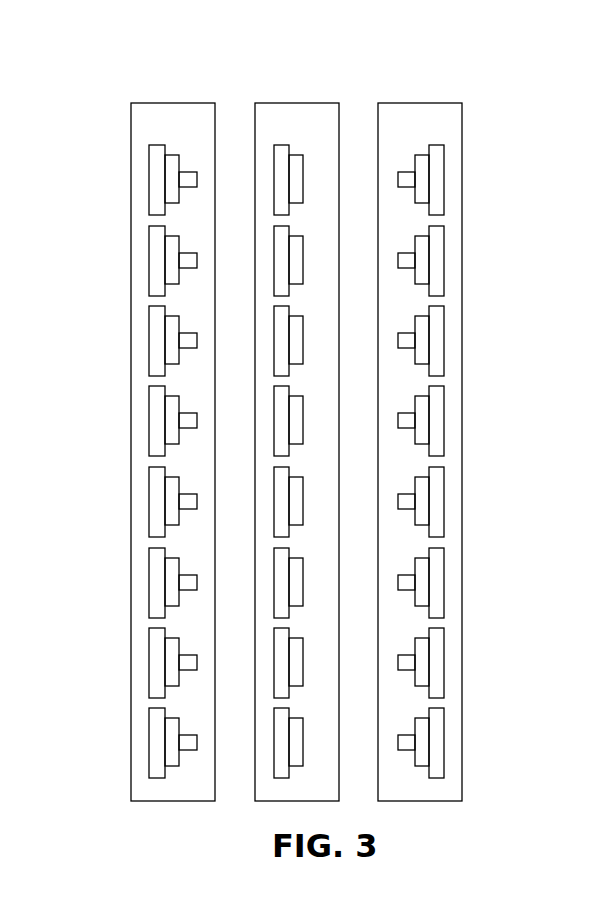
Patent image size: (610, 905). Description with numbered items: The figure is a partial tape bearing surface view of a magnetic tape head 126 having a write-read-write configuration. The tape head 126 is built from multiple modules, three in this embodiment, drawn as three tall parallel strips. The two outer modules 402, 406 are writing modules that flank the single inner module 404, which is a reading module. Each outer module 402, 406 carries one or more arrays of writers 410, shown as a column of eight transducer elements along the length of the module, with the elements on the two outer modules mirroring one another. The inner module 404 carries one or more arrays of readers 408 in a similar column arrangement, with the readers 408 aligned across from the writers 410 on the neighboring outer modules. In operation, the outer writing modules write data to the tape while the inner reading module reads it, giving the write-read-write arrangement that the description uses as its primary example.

The tape head 126 is at (290, 401).
The outer module 402 is at (158, 94).
The inner module 404 is at (400, 413).
The outer module 406 is at (460, 413).
The reader 408 is at (303, 340).
The writer 410 is at (444, 418).